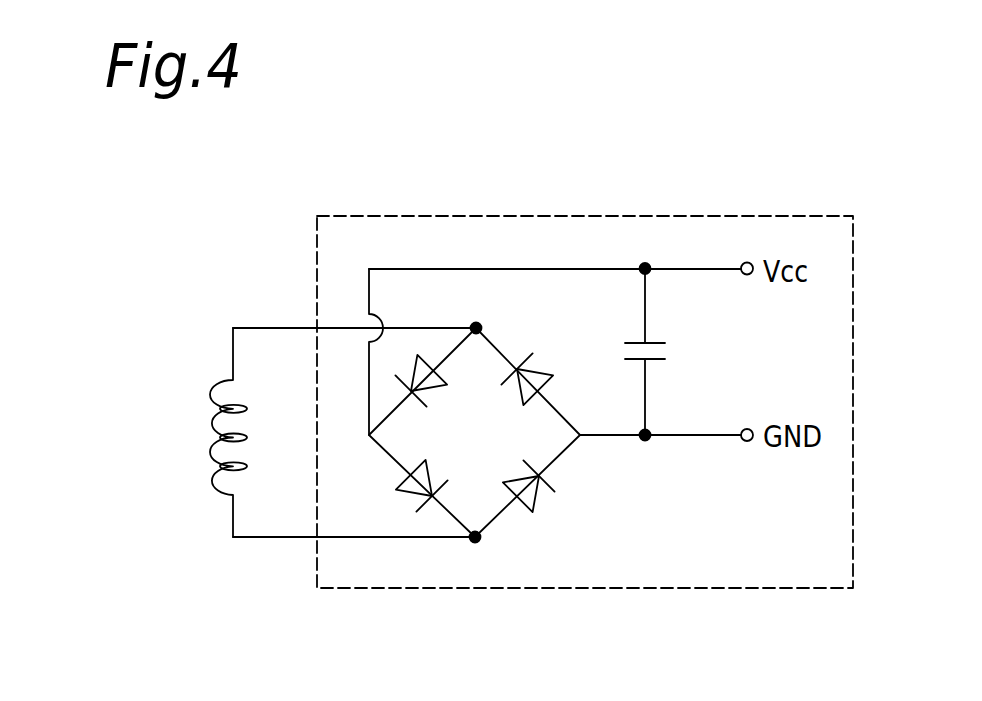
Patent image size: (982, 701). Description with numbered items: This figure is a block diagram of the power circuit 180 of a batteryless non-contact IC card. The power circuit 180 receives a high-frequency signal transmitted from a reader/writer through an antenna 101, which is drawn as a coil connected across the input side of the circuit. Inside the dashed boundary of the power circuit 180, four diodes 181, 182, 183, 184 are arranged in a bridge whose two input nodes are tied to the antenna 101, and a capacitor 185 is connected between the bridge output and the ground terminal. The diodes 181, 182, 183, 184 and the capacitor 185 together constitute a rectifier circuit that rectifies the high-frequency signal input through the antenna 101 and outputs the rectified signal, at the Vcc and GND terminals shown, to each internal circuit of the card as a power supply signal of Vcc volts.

The antenna 101 is at (213, 420).
The power circuit 180 is at (567, 216).
The diode 181 is at (541, 371).
The diode 182 is at (542, 488).
The diode 183 is at (416, 492).
The diode 184 is at (430, 388).
The capacitor 185 is at (667, 348).